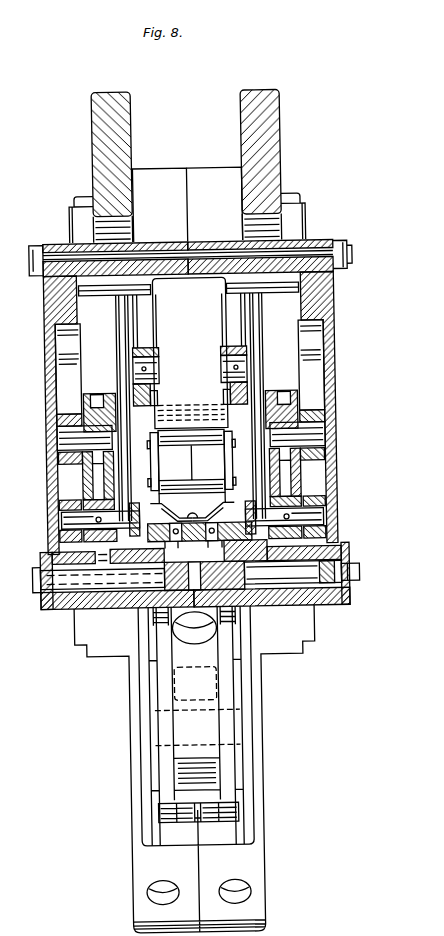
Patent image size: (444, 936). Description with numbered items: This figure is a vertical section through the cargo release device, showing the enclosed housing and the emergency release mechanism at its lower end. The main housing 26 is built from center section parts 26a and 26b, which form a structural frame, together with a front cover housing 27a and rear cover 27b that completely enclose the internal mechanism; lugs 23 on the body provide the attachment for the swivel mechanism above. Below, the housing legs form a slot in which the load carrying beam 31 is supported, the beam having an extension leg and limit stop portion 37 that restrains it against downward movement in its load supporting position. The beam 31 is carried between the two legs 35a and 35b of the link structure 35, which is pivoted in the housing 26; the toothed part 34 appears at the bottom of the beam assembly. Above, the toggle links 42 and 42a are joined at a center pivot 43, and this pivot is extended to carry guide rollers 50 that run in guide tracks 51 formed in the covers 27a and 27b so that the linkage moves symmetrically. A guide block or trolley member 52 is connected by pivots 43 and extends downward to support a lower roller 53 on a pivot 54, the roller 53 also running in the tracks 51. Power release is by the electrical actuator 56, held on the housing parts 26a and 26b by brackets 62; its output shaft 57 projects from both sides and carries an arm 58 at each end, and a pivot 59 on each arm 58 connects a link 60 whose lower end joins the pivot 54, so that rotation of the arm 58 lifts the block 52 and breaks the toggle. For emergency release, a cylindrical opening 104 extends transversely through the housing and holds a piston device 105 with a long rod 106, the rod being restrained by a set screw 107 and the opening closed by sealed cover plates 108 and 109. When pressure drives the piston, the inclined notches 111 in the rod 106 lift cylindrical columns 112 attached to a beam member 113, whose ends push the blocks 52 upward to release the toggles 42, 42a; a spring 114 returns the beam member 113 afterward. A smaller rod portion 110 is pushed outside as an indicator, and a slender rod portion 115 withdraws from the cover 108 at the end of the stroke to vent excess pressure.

The lug 23 is at (97, 131).
The main housing 26 is at (338, 333).
The center section part 26a is at (157, 172).
The center section part 26b is at (210, 172).
The front cover housing 27a is at (47, 270).
The rear cover 27b is at (336, 277).
The load carrying beam 31 is at (170, 771).
The toothed member 34 is at (165, 809).
The link structure 35 is at (242, 727).
The link leg 35a is at (232, 668).
The link leg 35b is at (152, 675).
The extension leg and limit stop portion 37 is at (225, 692).
The toggle link 42 is at (106, 392).
The toggle link 42a is at (97, 391).
The pivot 43 is at (60, 430).
The guide roller 50 is at (60, 414).
The guide track 51 is at (58, 358).
The guide block or trolley member 52 is at (70, 462).
The lower roller 53 is at (66, 502).
The pivot 54 is at (68, 512).
The electrical actuator 56 is at (198, 280).
The output shaft 57 is at (222, 352).
The arm 58 is at (152, 397).
The pivot 59 is at (223, 402).
The link 60 is at (150, 447).
The bracket 62 is at (160, 470).
The cylindrical opening 104 is at (256, 616).
The piston device 105 is at (318, 601).
The rod 106 is at (92, 603).
The set screw 107 is at (66, 601).
The cover plate 108 is at (347, 555).
The cover plate 109 is at (44, 552).
The smaller rod portion 110 is at (38, 590).
The notch with inclined plane 111 is at (196, 516).
The cylindrical column 112 is at (128, 606).
The beam member 113 is at (333, 547).
The spring 114 is at (186, 516).
The slender rod portion 115 is at (357, 570).